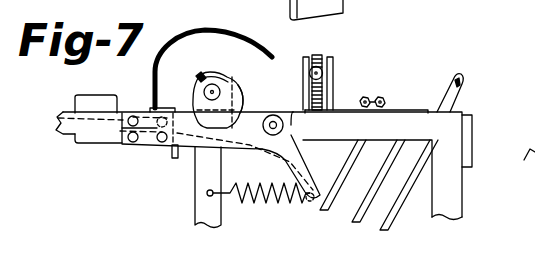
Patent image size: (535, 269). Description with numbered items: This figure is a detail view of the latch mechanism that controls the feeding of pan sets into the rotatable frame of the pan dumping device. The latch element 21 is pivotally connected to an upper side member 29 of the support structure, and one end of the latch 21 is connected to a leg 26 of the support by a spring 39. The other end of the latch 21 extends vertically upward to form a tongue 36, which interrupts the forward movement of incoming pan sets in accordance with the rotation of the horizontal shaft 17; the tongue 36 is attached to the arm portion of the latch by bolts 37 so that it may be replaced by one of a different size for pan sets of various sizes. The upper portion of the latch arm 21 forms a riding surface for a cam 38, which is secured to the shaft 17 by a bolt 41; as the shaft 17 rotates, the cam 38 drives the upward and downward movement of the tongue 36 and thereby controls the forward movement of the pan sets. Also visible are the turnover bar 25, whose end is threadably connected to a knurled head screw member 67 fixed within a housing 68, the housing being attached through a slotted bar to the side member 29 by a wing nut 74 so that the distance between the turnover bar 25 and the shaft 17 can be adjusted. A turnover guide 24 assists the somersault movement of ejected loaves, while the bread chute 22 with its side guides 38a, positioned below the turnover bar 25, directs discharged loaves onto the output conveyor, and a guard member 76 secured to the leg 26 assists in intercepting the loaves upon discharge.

The rotatable horizontal shaft 17 is at (218, 83).
The latch element 21 is at (160, 158).
The bread chute 22 is at (393, 218).
The turnover guide 24 is at (199, 32).
The turnover bar 25 is at (323, 70).
The leg 26 is at (193, 203).
The upper side member 29 is at (301, 112).
The tongue 36 is at (99, 115).
The bolt 37 is at (128, 141).
The cam 38 is at (243, 91).
The side guide 38a is at (350, 216).
The spring 39 is at (258, 203).
The bolt 41 is at (197, 74).
The knurled head screw member 67 is at (321, 57).
The housing 68 is at (333, 87).
The wing nut 74 is at (385, 100).
The guard member 76 is at (463, 75).